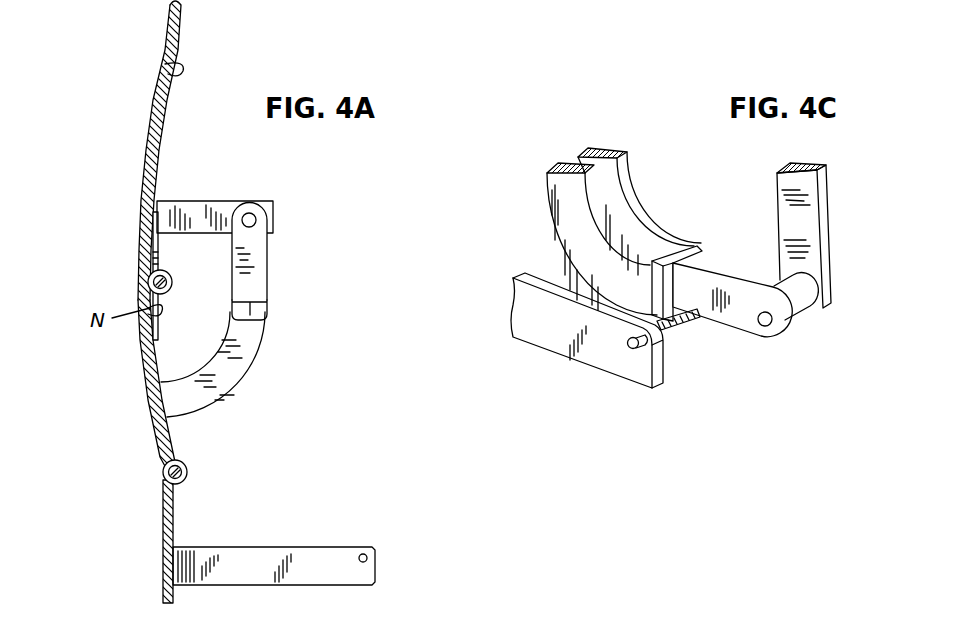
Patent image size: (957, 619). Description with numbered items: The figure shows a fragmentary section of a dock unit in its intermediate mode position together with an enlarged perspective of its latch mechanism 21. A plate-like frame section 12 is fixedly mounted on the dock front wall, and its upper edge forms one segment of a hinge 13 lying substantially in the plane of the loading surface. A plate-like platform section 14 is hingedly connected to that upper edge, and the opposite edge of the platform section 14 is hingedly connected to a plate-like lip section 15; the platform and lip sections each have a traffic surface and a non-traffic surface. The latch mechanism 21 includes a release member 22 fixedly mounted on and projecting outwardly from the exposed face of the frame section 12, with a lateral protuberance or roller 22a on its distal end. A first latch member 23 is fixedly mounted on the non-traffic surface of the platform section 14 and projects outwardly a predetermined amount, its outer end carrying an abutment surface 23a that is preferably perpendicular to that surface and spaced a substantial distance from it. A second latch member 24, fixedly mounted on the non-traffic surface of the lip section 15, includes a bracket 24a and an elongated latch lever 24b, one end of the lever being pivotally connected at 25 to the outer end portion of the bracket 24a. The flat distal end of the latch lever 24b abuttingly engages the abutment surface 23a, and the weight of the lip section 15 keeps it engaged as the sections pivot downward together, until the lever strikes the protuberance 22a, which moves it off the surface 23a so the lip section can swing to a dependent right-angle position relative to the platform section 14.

In FIG. 4A, the frame section 12 is at (161, 529).
In FIG. 4A, the hinge 13 is at (166, 472).
In FIG. 4A, the platform section 14 is at (138, 357).
In FIG. 4A, the lip section 15 is at (183, 27).
In FIG. 4A, the latch mechanism 21 is at (260, 371).
In FIG. 4C, the latch mechanism 21 is at (603, 234).
In FIG. 4A, the release member 22 is at (275, 514).
In FIG. 4C, the release member 22 is at (533, 336).
In FIG. 4A, the protuberance 22a is at (368, 556).
In FIG. 4C, the protuberance 22a is at (683, 330).
In FIG. 4A, the first latch member 23 is at (260, 358).
In FIG. 4C, the first latch member 23 is at (644, 234).
In FIG. 4A, the abutment surface 23a is at (252, 310).
In FIG. 4C, the abutment surface 23a is at (693, 240).
In FIG. 4A, the second latch member 24 is at (263, 227).
In FIG. 4C, the second latch member 24 is at (772, 278).
In FIG. 4A, the bracket 24a is at (183, 201).
In FIG. 4C, the bracket 24a is at (820, 208).
In FIG. 4A, the latch lever 24b is at (254, 272).
In FIG. 4C, the latch lever 24b is at (737, 313).
In FIG. 4A, the pivotal connection 25 is at (250, 212).
In FIG. 4C, the pivotal connection 25 is at (765, 326).